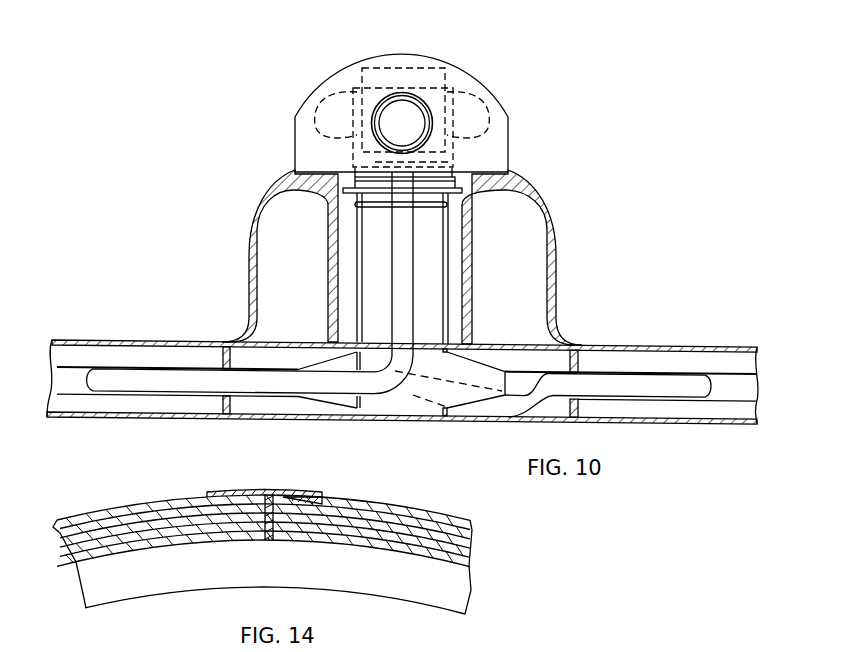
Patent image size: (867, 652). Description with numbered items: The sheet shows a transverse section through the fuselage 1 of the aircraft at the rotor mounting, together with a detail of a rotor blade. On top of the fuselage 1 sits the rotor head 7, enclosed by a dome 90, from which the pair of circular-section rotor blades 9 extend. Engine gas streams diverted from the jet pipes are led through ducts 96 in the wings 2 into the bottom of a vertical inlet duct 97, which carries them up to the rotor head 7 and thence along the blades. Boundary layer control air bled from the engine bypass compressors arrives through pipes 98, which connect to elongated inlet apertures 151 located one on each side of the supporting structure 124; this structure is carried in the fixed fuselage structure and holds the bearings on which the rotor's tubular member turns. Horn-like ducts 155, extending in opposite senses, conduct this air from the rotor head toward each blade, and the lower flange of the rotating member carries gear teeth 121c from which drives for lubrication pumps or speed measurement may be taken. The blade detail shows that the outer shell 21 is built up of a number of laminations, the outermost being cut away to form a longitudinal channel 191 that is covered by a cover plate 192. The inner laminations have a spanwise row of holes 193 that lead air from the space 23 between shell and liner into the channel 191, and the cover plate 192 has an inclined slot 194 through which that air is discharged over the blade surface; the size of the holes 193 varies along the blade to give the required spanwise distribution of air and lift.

In FIG. 10, the fuselage 1 is at (556, 252).
In FIG. 10, the wings 2 is at (648, 350).
In FIG. 10, the rotor head 7 is at (453, 100).
In FIG. 10, the rotor blades 9 is at (380, 98).
In FIG. 10, the dome 90 is at (432, 62).
In FIG. 10, the ducts 96 is at (80, 375).
In FIG. 10, the vertical inlet duct 97 is at (428, 295).
In FIG. 10, the pipes 98 is at (395, 283).
In FIG. 10, the gear teeth 121c is at (422, 210).
In FIG. 10, the supporting structure 124 is at (435, 193).
In FIG. 10, the inlet apertures 151 is at (500, 182).
In FIG. 10, the horn-like ducts 155 is at (312, 100).
In FIG. 14, the outer shell 21 is at (380, 525).
In FIG. 14, the space between shell and liner 23 is at (406, 580).
In FIG. 14, the longitudinal channel 191 is at (260, 498).
In FIG. 14, the cover plate 192 is at (306, 499).
In FIG. 14, the holes 193 is at (270, 543).
In FIG. 14, the inclined slot 194 is at (276, 495).